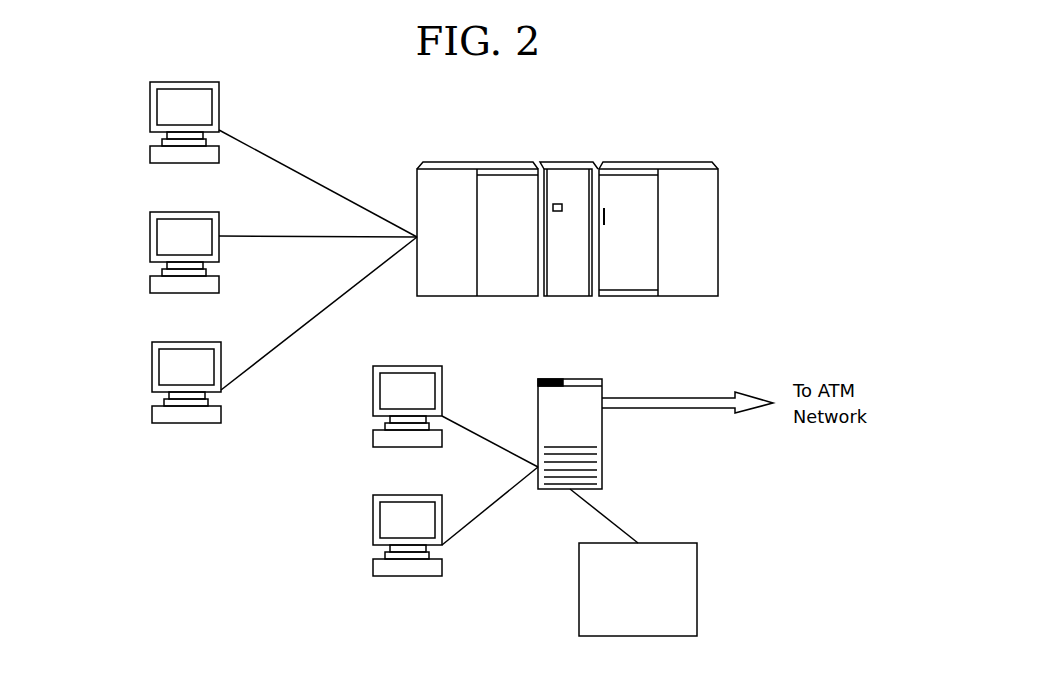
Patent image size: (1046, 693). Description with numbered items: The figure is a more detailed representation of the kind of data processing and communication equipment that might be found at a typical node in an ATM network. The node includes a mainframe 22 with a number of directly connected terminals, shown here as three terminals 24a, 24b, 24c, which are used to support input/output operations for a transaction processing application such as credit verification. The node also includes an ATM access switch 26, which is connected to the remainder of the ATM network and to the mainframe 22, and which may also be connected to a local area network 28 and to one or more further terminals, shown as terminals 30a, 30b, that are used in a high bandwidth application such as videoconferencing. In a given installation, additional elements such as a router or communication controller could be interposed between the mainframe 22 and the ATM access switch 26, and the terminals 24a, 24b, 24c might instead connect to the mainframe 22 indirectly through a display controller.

The mainframe 22 is at (532, 160).
The terminal 24a is at (150, 122).
The terminal 24b is at (150, 252).
The terminal 24c is at (152, 382).
The ATM access switch 26 is at (603, 378).
The local area network 28 is at (698, 602).
The terminal 30a is at (373, 409).
The terminal 30b is at (373, 540).